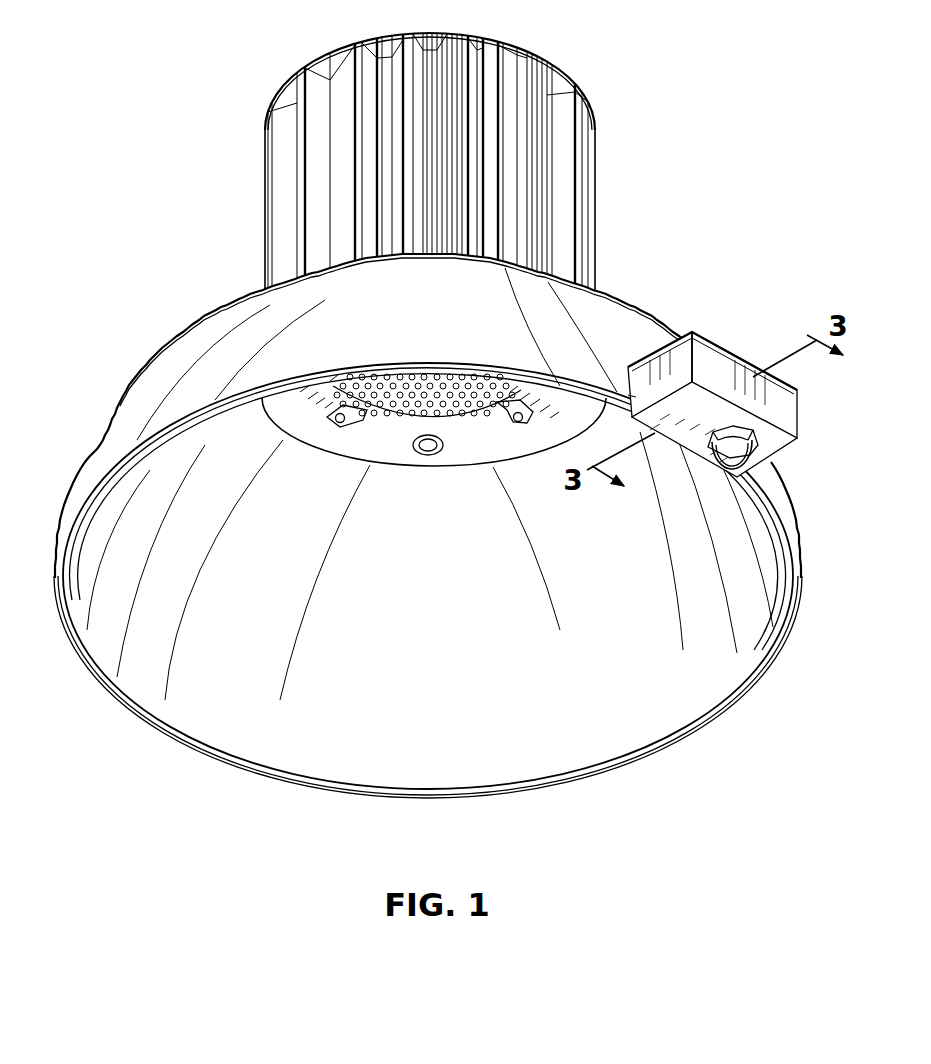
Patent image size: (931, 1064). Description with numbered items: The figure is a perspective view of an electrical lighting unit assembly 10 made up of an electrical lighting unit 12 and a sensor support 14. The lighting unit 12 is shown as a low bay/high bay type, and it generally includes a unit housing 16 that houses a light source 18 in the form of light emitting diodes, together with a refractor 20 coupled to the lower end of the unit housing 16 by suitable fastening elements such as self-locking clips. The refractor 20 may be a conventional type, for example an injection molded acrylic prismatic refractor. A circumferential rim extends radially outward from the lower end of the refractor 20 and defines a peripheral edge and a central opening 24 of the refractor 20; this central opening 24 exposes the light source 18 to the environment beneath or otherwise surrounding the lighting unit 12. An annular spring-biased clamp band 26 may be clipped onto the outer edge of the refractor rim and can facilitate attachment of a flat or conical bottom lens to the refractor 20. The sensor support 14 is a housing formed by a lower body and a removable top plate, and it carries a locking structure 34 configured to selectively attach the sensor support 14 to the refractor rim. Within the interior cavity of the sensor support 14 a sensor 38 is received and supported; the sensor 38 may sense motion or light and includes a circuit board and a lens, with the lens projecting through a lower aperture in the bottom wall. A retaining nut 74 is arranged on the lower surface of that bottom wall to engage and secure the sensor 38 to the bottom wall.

The electrical lighting unit assembly 10 is at (264, 52).
The electrical lighting unit 12 is at (425, 161).
The sensor support 14 is at (739, 414).
The unit housing 16 is at (596, 186).
The light source 18 is at (402, 411).
The refractor 20 is at (122, 424).
The central opening 24 is at (252, 730).
The clamp band 26 is at (92, 662).
The locking structure 34 is at (637, 395).
The sensor 38 is at (740, 458).
The retaining nut 74 is at (790, 440).